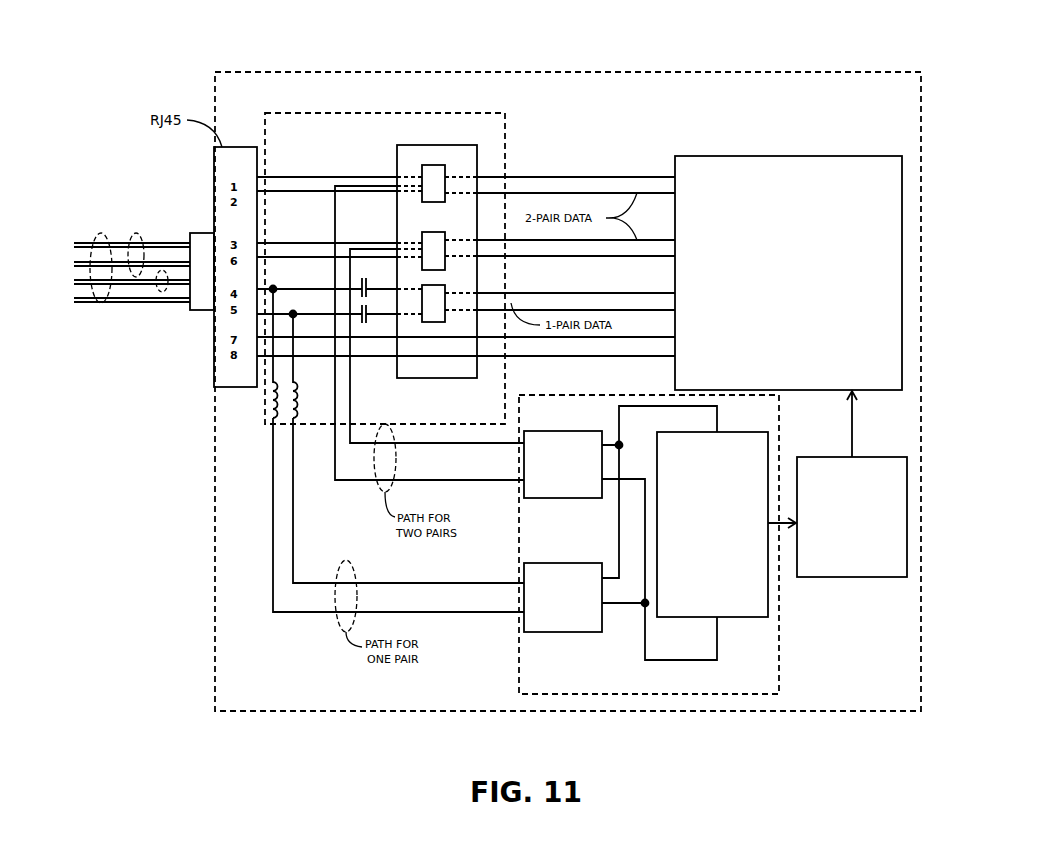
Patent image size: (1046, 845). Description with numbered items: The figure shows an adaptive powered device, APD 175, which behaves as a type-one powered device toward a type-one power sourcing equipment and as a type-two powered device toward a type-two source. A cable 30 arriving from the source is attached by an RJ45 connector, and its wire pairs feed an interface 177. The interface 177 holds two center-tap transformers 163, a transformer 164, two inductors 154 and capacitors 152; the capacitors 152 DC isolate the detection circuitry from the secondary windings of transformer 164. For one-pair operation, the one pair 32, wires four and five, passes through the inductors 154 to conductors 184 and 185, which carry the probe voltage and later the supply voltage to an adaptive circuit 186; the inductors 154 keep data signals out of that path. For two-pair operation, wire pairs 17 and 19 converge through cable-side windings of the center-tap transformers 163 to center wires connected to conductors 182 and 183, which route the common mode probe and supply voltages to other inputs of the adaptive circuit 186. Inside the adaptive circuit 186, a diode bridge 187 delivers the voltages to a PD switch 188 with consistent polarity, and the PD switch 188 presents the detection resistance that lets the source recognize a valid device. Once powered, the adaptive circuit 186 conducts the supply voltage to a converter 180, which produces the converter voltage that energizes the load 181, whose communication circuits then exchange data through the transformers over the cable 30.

The APD 175 is at (578, 72).
The interface 177 is at (320, 113).
The center-tap transformers 163 is at (445, 240).
The transformer 164 is at (433, 285).
The capacitors 152 is at (362, 278).
The inductors 154 is at (279, 385).
The load 181 is at (715, 156).
The adaptive circuit 186 is at (597, 395).
The diode bridge 187 is at (543, 431).
The PD switch 188 is at (725, 618).
The converter 180 is at (822, 577).
The conductor 182 is at (424, 482).
The conductor 183 is at (416, 445).
The conductor 184 is at (453, 614).
The conductor 185 is at (450, 583).
The wire pair 17 is at (132, 247).
The wire pair 19 is at (140, 234).
The cable 30 is at (132, 301).
The one pair 32 is at (163, 293).